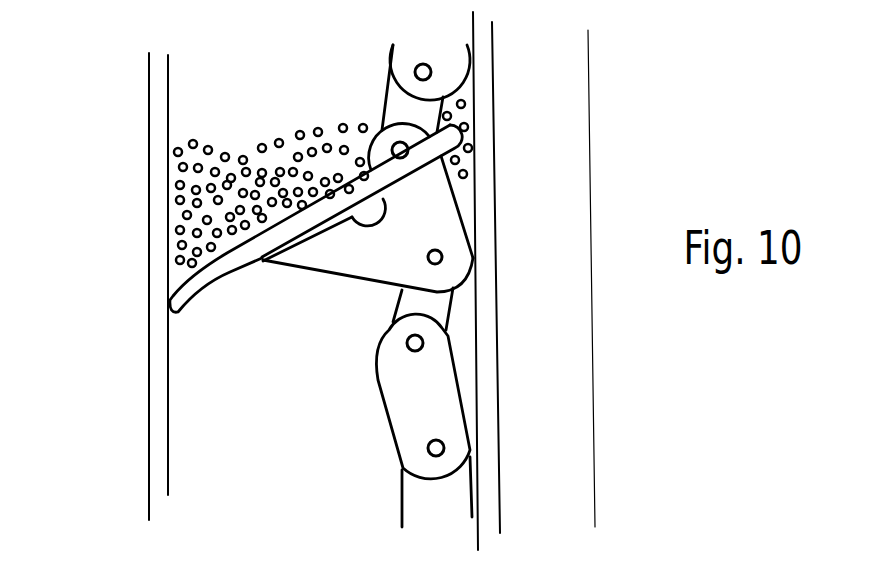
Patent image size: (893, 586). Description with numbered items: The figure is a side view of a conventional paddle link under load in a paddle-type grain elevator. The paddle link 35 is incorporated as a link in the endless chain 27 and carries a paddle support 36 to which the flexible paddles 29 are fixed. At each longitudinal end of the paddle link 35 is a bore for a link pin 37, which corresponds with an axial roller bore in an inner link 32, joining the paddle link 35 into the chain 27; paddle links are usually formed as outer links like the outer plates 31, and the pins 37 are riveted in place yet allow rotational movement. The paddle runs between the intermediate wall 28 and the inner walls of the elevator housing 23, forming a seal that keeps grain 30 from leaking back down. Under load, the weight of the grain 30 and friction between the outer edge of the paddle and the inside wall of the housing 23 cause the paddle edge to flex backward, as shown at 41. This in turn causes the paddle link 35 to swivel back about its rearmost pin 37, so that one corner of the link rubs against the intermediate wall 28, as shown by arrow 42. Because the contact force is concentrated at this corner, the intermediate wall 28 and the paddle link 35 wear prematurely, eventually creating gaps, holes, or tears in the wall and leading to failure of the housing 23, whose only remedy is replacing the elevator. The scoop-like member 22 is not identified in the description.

The scoop plate 22 is at (182, 256).
The elevator housing 23 is at (157, 135).
The endless chain 27 is at (352, 475).
The intermediate wall 28 is at (550, 90).
The paddles 29 is at (253, 308).
The grain 30 is at (254, 190).
The outer plates 31 is at (430, 397).
The inner link 32 is at (437, 305).
The paddle link 35 is at (422, 212).
The paddle support 36 is at (348, 257).
The link pin 37 is at (443, 255).
The backward flexing of paddle outer edge 41 is at (156, 322).
The contact point of paddle link against intermediate wall 42 is at (477, 265).